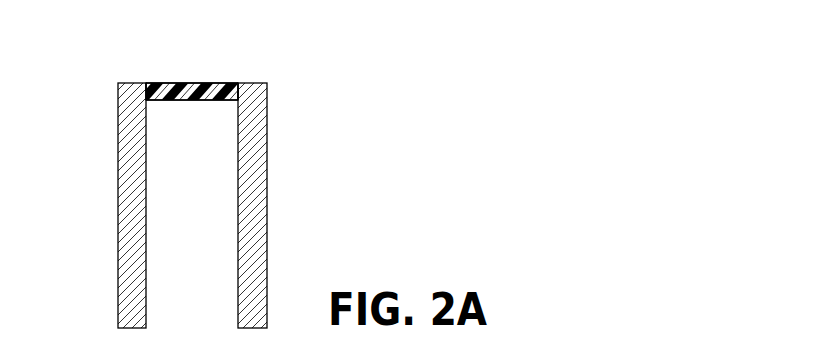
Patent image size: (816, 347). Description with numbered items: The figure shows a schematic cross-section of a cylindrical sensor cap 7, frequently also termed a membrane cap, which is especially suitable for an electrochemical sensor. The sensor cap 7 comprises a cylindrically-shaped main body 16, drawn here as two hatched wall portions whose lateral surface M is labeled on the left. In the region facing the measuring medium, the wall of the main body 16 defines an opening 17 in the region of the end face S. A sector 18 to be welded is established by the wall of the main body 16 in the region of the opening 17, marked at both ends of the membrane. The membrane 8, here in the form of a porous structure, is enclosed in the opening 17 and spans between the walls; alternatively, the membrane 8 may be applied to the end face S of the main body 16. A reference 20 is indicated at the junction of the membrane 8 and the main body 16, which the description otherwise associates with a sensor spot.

The sensor cap 7 is at (50, 74).
The membrane 8 is at (197, 83).
The main body 16 is at (280, 194).
The opening 17 is at (197, 130).
The sector to be welded 18 is at (152, 83).
The optical sensor spot 20 is at (240, 92).
The lateral surface M is at (103, 203).
The end face S is at (252, 66).